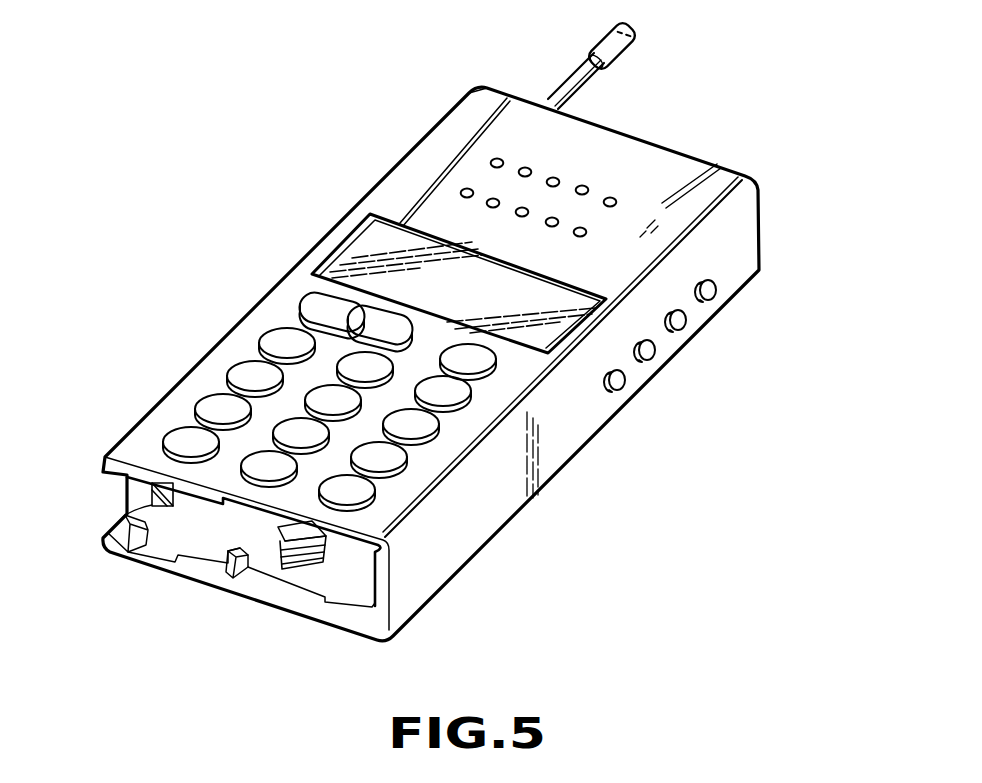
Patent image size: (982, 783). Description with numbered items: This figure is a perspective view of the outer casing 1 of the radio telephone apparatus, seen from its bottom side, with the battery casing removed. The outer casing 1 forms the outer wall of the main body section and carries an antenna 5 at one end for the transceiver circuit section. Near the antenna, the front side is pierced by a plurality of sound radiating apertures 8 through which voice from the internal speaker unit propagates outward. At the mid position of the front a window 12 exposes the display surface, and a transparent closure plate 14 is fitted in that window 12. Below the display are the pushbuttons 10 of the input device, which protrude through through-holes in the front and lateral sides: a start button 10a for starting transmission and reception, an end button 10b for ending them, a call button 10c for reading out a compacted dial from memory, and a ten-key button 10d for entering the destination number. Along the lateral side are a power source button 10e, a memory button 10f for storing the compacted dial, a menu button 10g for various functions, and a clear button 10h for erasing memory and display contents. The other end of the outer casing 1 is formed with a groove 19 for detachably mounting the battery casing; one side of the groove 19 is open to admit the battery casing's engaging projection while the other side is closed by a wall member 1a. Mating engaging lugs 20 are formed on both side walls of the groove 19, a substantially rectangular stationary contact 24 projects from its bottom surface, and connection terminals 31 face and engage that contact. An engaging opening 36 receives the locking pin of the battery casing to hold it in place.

The outer casing 1 is at (473, 522).
The wall member 1a is at (378, 622).
The antenna 5 is at (565, 92).
The sound radiating apertures 8 is at (588, 190).
The pushbuttons 10 is at (214, 376).
The start button 10a is at (297, 314).
The end button 10b is at (330, 283).
The call button 10c is at (497, 366).
The ten-key button 10d is at (240, 372).
The power source button 10e is at (717, 289).
The memory button 10f is at (688, 324).
The menu button 10g is at (657, 354).
The clear button 10h is at (627, 386).
The window 12 is at (371, 211).
The closure plate 14 is at (348, 250).
The groove 19 is at (158, 545).
The engaging lugs 20 is at (190, 490).
The stationary contact 24 is at (318, 570).
The connection terminals 31 is at (281, 569).
The engaging opening 36 is at (128, 499).